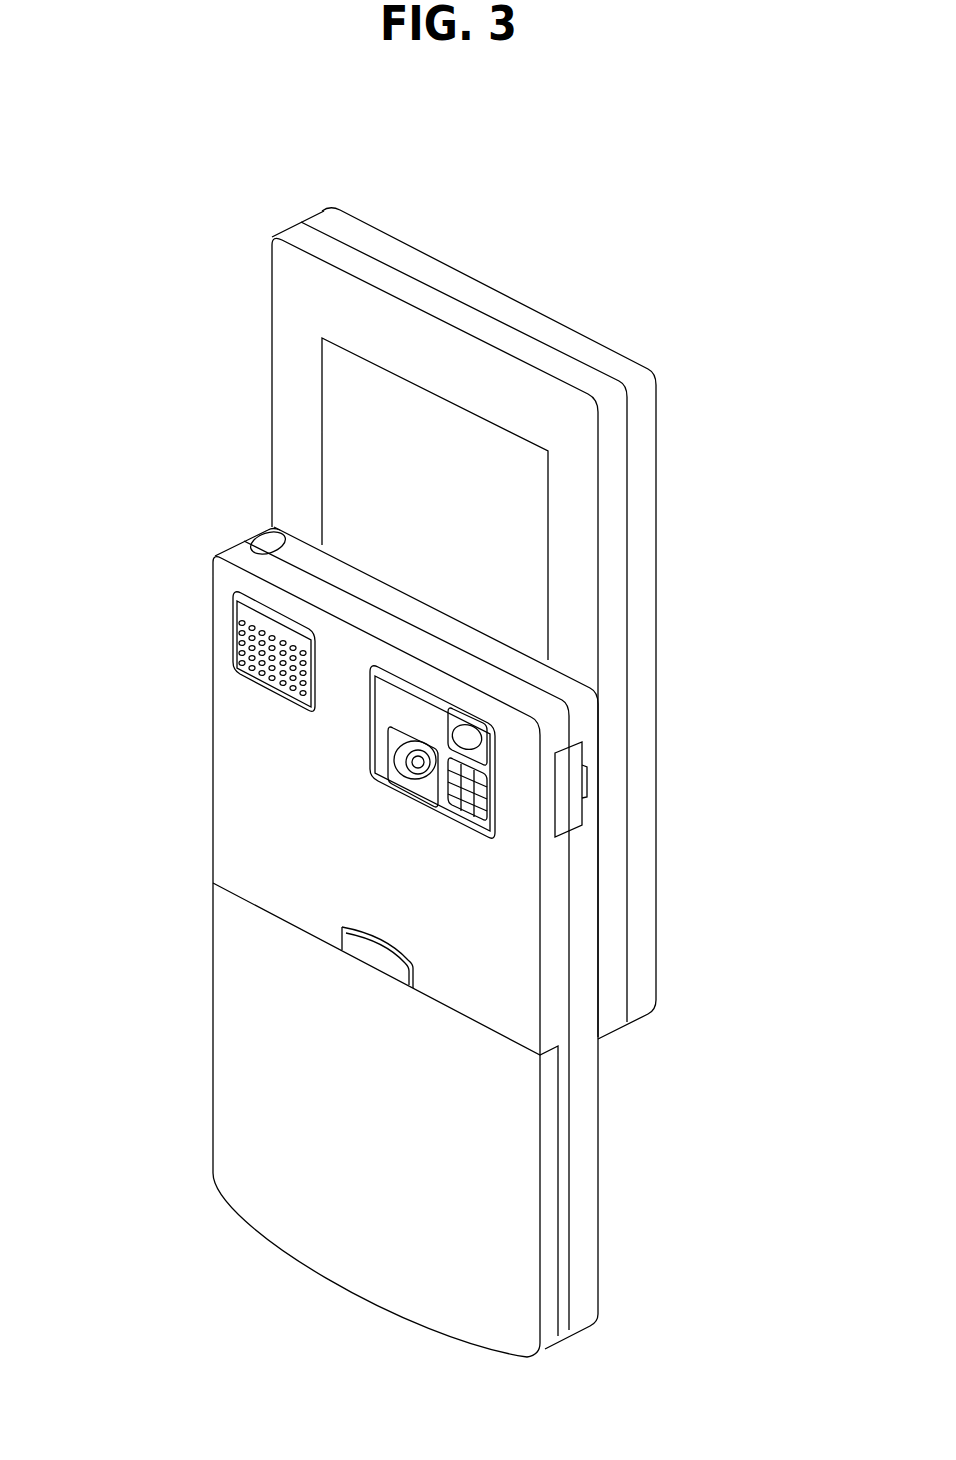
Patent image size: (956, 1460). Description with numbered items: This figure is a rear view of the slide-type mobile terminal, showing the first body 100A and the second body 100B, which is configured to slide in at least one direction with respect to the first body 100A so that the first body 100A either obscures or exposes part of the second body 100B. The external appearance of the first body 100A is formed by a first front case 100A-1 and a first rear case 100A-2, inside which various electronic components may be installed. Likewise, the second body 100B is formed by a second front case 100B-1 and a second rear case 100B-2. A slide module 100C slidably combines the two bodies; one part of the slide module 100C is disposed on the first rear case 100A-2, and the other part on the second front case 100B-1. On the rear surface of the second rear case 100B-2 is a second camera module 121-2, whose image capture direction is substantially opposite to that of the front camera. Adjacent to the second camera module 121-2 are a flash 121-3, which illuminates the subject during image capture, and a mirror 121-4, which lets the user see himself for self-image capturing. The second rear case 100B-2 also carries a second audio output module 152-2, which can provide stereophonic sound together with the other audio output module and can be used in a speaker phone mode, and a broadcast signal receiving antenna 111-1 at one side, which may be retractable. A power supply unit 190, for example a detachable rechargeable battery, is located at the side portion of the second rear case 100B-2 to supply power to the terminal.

The first body 100A is at (227, 385).
The first front case 100A-1 is at (327, 215).
The first rear case 100A-2 is at (307, 231).
The slide module 100C is at (321, 477).
The second body 100B is at (186, 772).
The second front case 100B-1 is at (587, 1075).
The second rear case 100B-2 is at (553, 1002).
The broadcast signal receiving antenna 111-1 is at (260, 539).
The second audio output module 152-2 is at (243, 640).
The second camera module 121-2 is at (418, 762).
The flash 121-3 is at (468, 806).
The mirror 121-4 is at (470, 738).
The power supply unit 190 is at (232, 993).